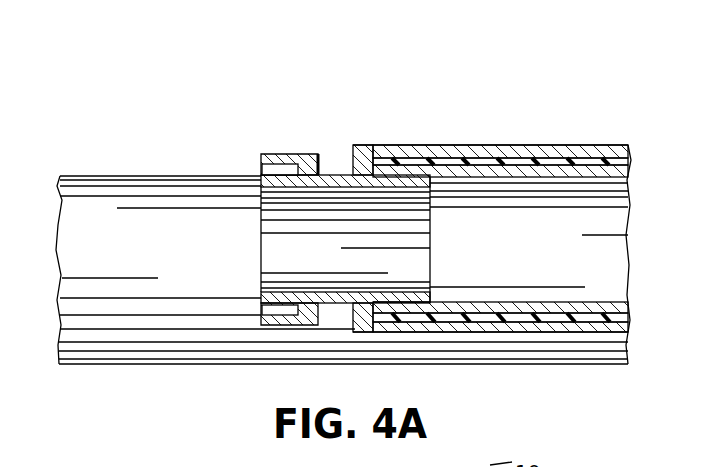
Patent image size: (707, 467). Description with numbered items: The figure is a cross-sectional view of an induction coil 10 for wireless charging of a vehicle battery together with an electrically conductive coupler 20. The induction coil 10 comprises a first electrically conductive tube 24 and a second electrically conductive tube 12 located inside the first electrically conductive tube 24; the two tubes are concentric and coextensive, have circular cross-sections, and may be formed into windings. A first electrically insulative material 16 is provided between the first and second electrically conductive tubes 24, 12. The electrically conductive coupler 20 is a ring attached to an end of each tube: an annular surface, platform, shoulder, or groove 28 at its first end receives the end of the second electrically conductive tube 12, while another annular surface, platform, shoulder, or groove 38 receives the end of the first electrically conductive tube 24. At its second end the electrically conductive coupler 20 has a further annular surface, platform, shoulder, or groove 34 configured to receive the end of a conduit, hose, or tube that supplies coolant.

The induction coil 10 is at (258, 62).
The second electrically conductive tube 12 is at (463, 163).
The first electrically insulative material 16 is at (527, 158).
The electrically conductive coupler 20 is at (327, 228).
The first electrically conductive tube 24 is at (90, 208).
The groove 28 is at (435, 292).
The groove 34 is at (248, 158).
The groove 38 is at (404, 138).